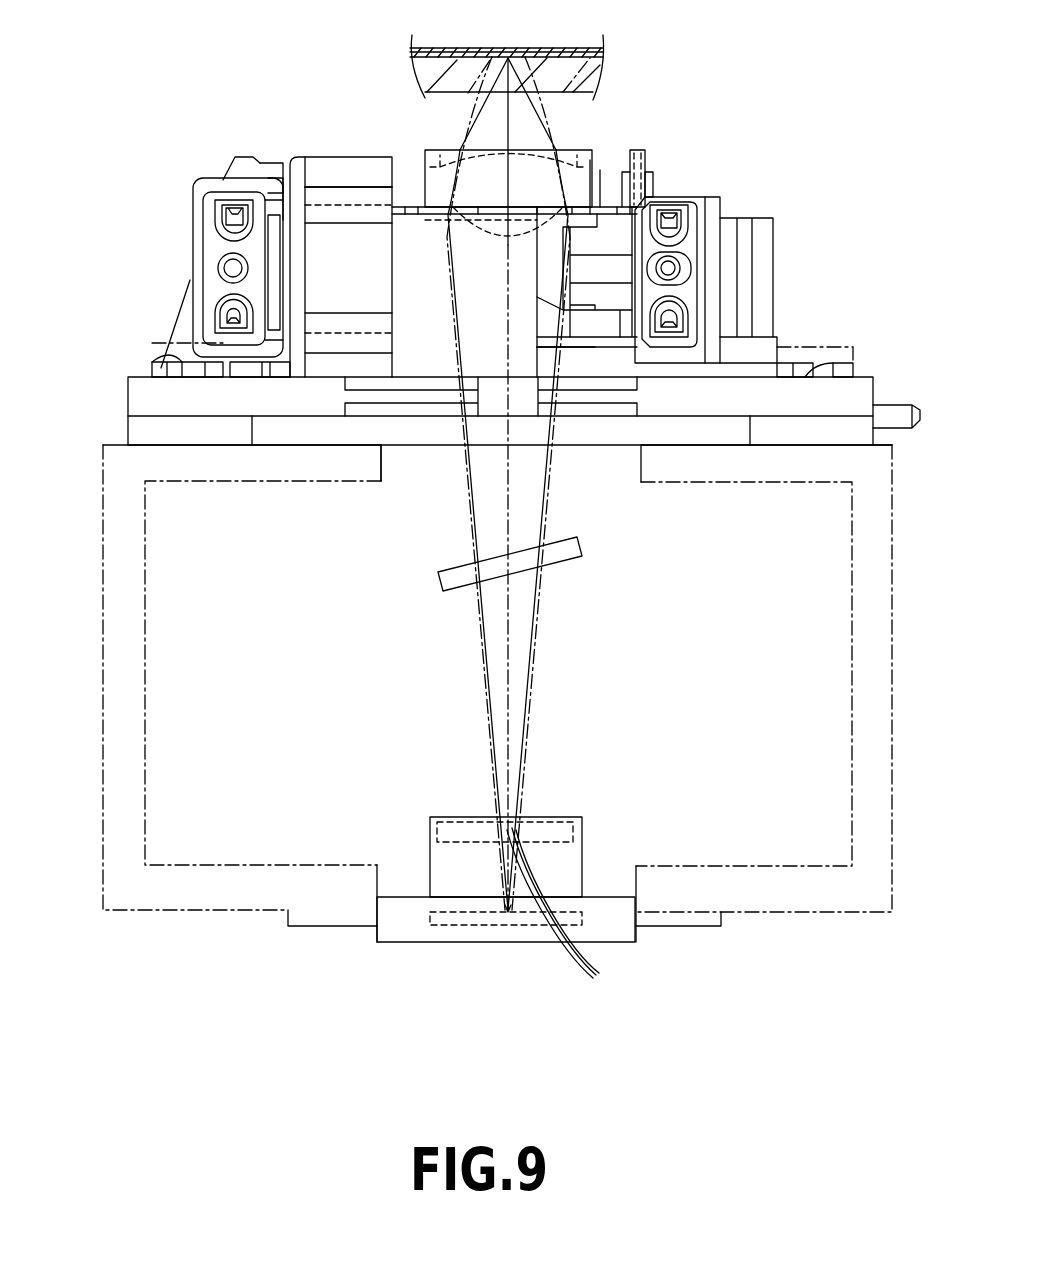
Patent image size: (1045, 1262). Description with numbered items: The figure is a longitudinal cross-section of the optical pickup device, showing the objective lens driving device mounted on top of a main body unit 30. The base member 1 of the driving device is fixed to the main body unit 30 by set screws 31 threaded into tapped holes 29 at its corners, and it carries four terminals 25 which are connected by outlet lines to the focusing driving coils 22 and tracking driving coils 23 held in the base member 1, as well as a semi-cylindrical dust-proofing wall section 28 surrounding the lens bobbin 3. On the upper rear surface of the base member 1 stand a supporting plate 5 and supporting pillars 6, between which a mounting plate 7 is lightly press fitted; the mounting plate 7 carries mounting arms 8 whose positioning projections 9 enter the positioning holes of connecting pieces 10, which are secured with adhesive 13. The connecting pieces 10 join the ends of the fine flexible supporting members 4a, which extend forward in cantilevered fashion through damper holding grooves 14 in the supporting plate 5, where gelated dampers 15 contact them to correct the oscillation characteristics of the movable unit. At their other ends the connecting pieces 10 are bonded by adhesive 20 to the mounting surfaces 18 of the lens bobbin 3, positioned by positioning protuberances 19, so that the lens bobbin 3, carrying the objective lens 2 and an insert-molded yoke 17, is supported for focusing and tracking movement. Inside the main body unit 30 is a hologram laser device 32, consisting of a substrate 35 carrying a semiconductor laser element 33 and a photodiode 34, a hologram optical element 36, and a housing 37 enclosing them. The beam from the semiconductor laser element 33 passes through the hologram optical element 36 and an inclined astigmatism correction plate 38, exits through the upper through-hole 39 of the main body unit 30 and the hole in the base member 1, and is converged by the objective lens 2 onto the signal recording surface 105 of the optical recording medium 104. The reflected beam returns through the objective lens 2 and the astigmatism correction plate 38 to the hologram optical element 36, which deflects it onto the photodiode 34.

The base member 1 is at (145, 395).
The objective lens 2 is at (433, 175).
The lens bobbin 3 is at (723, 202).
The supporting member 4a is at (408, 225).
The supporting plate 5 is at (357, 155).
The supporting pillar 6 is at (238, 156).
The mounting plate 7 is at (277, 167).
The mounting arm 8 is at (197, 183).
The positioning projection 9 is at (235, 268).
The connecting piece 10 is at (208, 255).
The adhesive 13 is at (218, 222).
The damper holding groove 14 is at (321, 193).
The damper 15 is at (350, 193).
The yoke 17 is at (610, 203).
The mounting surface 18 is at (713, 212).
The positioning protuberance 19 is at (693, 262).
The adhesive 20 is at (672, 217).
The focusing driving coil 22 is at (635, 150).
The tracking driving coil 23 is at (652, 172).
The terminal 25 is at (893, 410).
The dust-proofing wall section 28 is at (565, 357).
The tapped hole 29 is at (175, 350).
The main body unit 30 is at (114, 554).
The set screw 31 is at (152, 343).
The hologram laser device 32 is at (582, 835).
The semiconductor laser element 33 is at (508, 912).
The photodiode 34 is at (593, 978).
The substrate 35 is at (458, 918).
The hologram optical element 36 is at (467, 818).
The housing 37 is at (430, 865).
The astigmatism correction plate 38 is at (565, 553).
The upper through-hole 39 is at (381, 483).
The optical recording medium 104 is at (592, 72).
The signal recording surface 105 is at (412, 85).